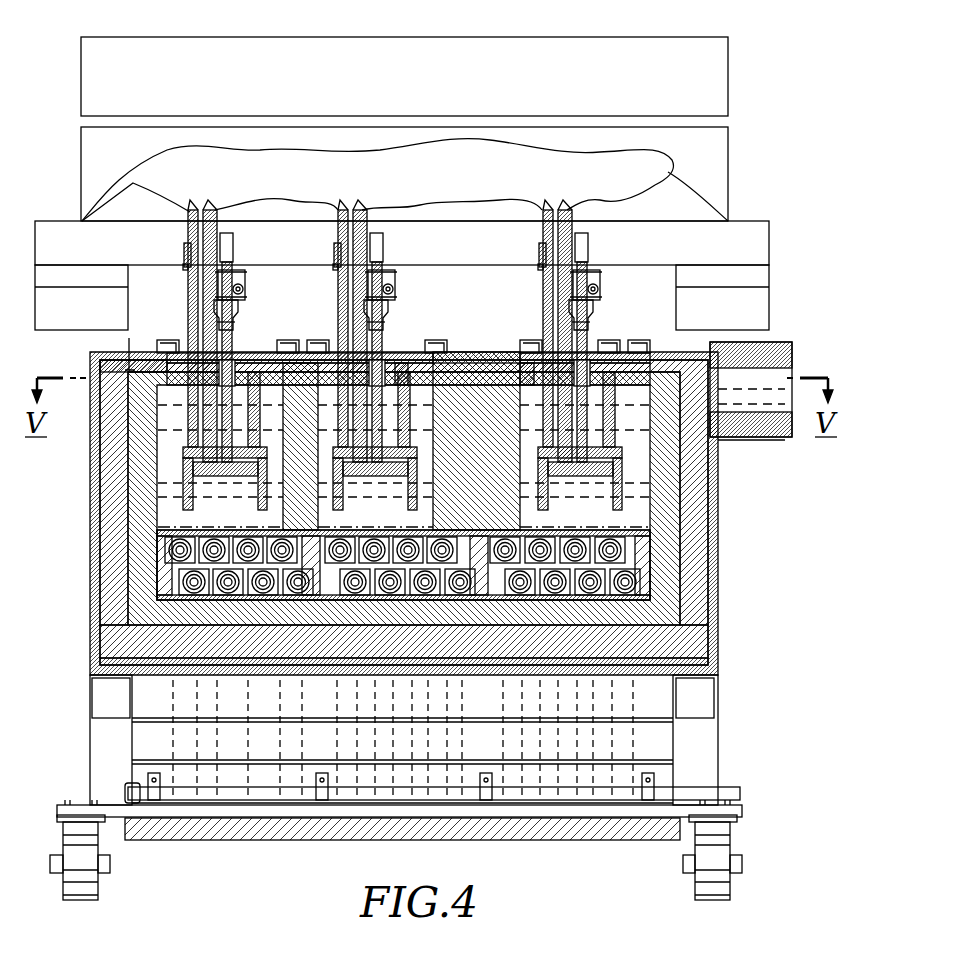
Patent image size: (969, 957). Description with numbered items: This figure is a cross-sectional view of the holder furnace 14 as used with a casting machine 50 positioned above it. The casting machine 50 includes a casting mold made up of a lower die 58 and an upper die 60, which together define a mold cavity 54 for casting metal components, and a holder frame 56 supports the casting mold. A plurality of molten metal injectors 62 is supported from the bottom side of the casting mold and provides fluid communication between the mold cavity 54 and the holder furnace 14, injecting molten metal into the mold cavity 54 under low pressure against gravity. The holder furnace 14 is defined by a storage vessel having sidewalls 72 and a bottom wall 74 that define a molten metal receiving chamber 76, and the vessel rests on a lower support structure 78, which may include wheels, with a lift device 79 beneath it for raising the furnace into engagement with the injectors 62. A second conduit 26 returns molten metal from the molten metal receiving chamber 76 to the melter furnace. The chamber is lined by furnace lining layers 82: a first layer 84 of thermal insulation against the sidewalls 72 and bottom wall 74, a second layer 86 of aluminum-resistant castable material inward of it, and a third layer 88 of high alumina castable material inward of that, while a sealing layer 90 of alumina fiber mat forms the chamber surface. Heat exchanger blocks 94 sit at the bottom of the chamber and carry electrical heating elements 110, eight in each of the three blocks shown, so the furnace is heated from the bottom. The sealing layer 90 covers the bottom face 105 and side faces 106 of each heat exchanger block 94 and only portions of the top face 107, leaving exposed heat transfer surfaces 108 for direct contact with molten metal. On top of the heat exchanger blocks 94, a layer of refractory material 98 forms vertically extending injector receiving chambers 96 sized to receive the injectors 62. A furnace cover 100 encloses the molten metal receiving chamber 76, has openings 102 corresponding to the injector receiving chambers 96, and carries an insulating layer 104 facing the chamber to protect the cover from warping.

The holder furnace 14 is at (84, 660).
The second conduit 26 is at (788, 373).
The casting machine 50 is at (70, 84).
The mold cavity 54 is at (368, 184).
The holder frame 56 is at (745, 228).
The lower die 58 is at (728, 155).
The upper die 60 is at (728, 74).
The molten metal injectors 62 is at (232, 328).
The sidewalls 72 is at (718, 658).
The bottom wall 74 is at (685, 680).
The molten metal receiving chamber 76 is at (636, 360).
The lower support structure 78 is at (718, 740).
The lift device 79 is at (592, 842).
The furnace lining layers 82 is at (112, 522).
The first layer 84 is at (707, 545).
The second layer 86 is at (692, 588).
The third layer 88 is at (682, 612).
The sealing layer 90 is at (140, 477).
The heat exchanger blocks 94 is at (163, 677).
The injector receiving chambers 96 is at (103, 372).
The refractory material 98 is at (158, 457).
The furnace cover 100 is at (130, 345).
The openings 102 is at (404, 338).
The insulating layer 104 is at (165, 345).
The bottom face 105 is at (280, 605).
The side faces 106 is at (148, 597).
The top face 107 is at (485, 520).
The heat transfer surfaces 108 is at (225, 512).
The electrical heating elements 110 is at (466, 640).